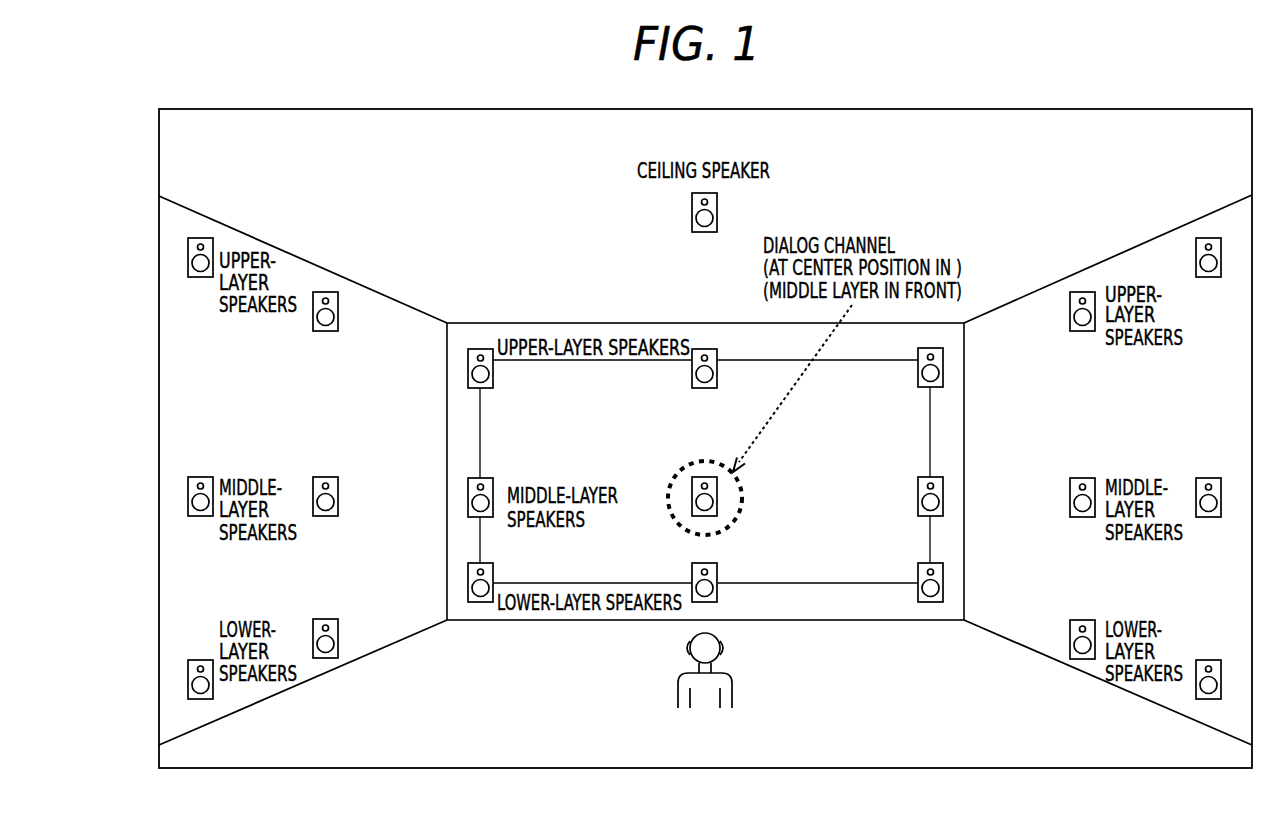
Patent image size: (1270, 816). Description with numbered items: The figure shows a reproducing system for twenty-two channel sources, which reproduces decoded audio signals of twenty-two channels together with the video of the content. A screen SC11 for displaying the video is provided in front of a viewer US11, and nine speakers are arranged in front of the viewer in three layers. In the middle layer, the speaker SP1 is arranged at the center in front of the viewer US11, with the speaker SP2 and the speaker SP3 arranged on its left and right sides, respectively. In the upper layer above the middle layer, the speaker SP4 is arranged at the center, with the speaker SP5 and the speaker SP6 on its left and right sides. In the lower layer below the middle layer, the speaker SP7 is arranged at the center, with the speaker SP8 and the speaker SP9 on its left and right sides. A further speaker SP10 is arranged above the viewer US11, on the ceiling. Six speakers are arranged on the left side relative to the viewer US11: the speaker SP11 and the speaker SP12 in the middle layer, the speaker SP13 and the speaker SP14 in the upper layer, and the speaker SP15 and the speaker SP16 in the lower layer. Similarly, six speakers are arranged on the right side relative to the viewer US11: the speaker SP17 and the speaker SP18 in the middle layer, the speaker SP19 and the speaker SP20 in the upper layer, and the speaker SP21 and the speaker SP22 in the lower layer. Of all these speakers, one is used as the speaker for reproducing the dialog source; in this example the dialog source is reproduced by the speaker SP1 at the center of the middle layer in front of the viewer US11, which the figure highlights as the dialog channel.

The speaker SP1 is at (718, 497).
The speaker SP2 is at (493, 488).
The speaker SP3 is at (918, 496).
The speaker SP4 is at (718, 372).
The speaker SP5 is at (493, 372).
The speaker SP6 is at (918, 372).
The speaker SP7 is at (718, 593).
The speaker SP8 is at (493, 573).
The speaker SP9 is at (918, 590).
The speaker SP10 is at (718, 211).
The speaker SP11 is at (200, 477).
The speaker SP12 is at (340, 496).
The speaker SP13 is at (201, 238).
The speaker SP14 is at (341, 313).
The speaker SP15 is at (200, 660).
The speaker SP16 is at (340, 632).
The speaker SP17 is at (1083, 478).
The speaker SP18 is at (1210, 478).
The speaker SP19 is at (1210, 238).
The speaker SP20 is at (1084, 331).
The speaker SP21 is at (1210, 660).
The speaker SP22 is at (1083, 620).
The screen SC11 is at (930, 432).
The viewer US11 is at (732, 686).